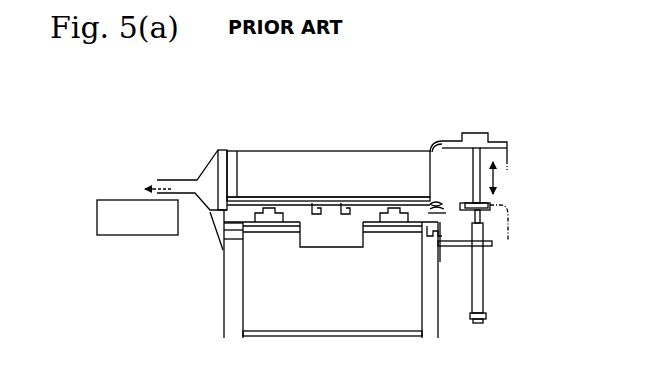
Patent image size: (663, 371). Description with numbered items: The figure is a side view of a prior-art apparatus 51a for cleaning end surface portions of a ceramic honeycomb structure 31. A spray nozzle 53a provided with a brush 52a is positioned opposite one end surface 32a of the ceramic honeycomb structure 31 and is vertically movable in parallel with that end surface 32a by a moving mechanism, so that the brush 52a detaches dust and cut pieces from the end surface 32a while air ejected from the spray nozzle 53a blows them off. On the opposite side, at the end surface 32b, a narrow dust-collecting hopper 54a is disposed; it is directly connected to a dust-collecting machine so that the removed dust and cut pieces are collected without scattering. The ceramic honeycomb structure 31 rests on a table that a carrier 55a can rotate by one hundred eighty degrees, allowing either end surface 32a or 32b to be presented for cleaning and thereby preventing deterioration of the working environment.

The apparatus for cleaning end surface portions 51a is at (188, 105).
The ceramic honeycomb structure 31 is at (315, 151).
The end surface 32a is at (432, 148).
The end surface 32b is at (232, 150).
The brush 52a is at (436, 138).
The spray nozzle 53a is at (452, 140).
The dust-collecting hopper 54a is at (115, 200).
The carrier 55a is at (335, 213).